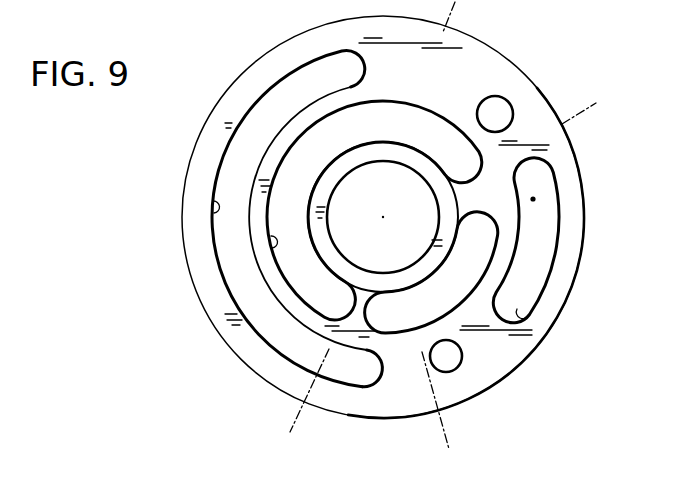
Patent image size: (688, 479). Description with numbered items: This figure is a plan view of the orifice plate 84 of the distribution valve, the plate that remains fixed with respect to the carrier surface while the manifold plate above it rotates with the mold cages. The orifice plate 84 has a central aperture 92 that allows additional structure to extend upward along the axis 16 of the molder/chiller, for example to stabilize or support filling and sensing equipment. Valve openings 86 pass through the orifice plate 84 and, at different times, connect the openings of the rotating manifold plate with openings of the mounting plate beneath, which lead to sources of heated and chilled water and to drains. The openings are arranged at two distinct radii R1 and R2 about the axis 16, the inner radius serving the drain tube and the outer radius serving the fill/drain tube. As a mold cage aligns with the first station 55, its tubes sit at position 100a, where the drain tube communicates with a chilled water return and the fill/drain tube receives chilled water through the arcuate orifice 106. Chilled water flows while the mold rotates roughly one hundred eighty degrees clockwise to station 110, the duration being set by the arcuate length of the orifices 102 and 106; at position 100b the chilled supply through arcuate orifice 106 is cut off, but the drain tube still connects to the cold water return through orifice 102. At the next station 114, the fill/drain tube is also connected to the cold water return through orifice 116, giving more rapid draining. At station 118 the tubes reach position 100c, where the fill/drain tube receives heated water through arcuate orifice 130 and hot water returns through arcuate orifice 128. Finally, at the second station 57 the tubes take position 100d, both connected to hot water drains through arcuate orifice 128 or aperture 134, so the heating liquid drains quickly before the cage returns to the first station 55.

The orifice plate 84 is at (188, 158).
The valve openings 86 is at (342, 120).
The position 100a is at (352, 365).
The position 100b is at (429, 139).
The position 100c is at (474, 237).
The position 100d is at (392, 310).
The arcuate orifice 102 is at (272, 243).
The arcuate orifice 106 is at (214, 208).
The station 110 is at (452, 22).
The station 114 is at (572, 113).
The orifice 116 is at (505, 112).
The station 118 is at (533, 199).
The arcuate orifice 128 is at (472, 282).
The arcuate orifice 130 is at (530, 311).
The aperture 134 is at (460, 357).
The axis 16 is at (384, 216).
The central aperture 92 is at (336, 234).
The first station 55 is at (298, 422).
The second station 57 is at (445, 435).
The radius R1 is at (383, 217).
The radius R2 is at (383, 217).